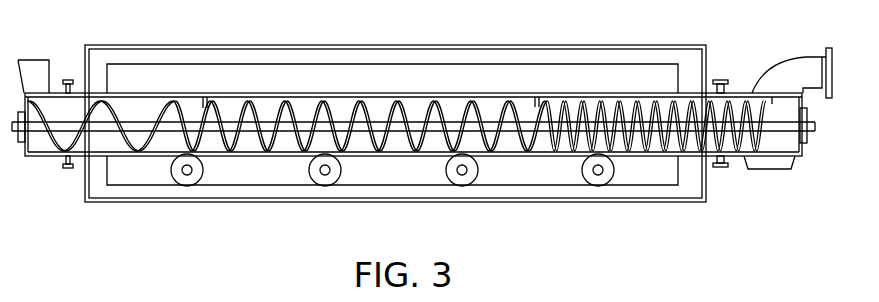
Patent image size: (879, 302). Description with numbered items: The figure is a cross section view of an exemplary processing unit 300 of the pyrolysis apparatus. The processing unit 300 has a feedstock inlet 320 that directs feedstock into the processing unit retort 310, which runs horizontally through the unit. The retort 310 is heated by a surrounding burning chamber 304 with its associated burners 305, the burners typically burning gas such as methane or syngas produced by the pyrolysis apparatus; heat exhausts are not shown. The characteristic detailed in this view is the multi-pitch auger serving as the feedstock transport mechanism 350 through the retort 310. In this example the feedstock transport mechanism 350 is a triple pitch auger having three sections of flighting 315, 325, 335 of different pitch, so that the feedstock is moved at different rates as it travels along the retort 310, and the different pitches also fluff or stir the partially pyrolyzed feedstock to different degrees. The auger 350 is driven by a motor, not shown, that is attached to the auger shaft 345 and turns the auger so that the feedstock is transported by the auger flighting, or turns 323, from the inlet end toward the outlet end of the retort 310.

The processing unit 300 is at (630, 201).
The burning chamber 304 is at (459, 66).
The burners 305 is at (596, 173).
The retort 310 is at (210, 93).
The first section of flighting 315 is at (128, 95).
The feedstock inlet 320 is at (33, 72).
The auger flighting 323 is at (483, 110).
The second section of flighting 325 is at (347, 95).
The third section of flighting 335 is at (588, 97).
The auger shaft 345 is at (287, 125).
The feedstock transport mechanism 350 is at (147, 137).